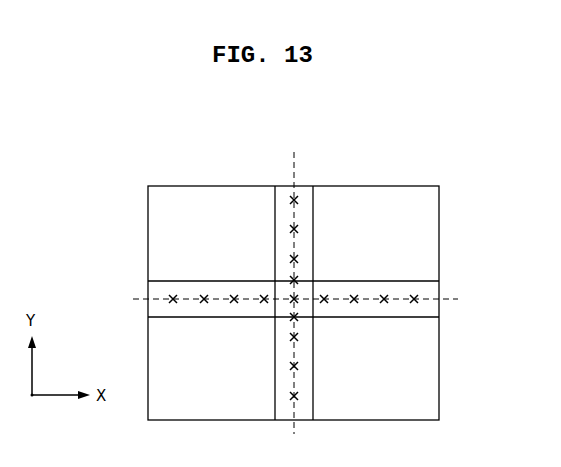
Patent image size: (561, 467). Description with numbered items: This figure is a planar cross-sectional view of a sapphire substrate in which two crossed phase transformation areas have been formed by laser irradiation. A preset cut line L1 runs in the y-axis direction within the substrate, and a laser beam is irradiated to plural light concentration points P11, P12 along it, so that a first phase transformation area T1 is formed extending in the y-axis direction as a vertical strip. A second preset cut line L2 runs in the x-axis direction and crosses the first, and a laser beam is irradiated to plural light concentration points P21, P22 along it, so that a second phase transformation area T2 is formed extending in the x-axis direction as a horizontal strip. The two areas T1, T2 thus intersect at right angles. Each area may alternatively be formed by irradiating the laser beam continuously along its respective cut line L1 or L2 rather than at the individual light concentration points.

The first phase transformation area T1 is at (274, 203).
The second phase transformation area T2 is at (407, 280).
The preset cut line L1 is at (294, 283).
The preset cut line L2 is at (309, 300).
The light concentration point P11 is at (299, 201).
The light concentration point P12 is at (299, 229).
The light concentration point P21 is at (414, 304).
The light concentration point P22 is at (384, 304).